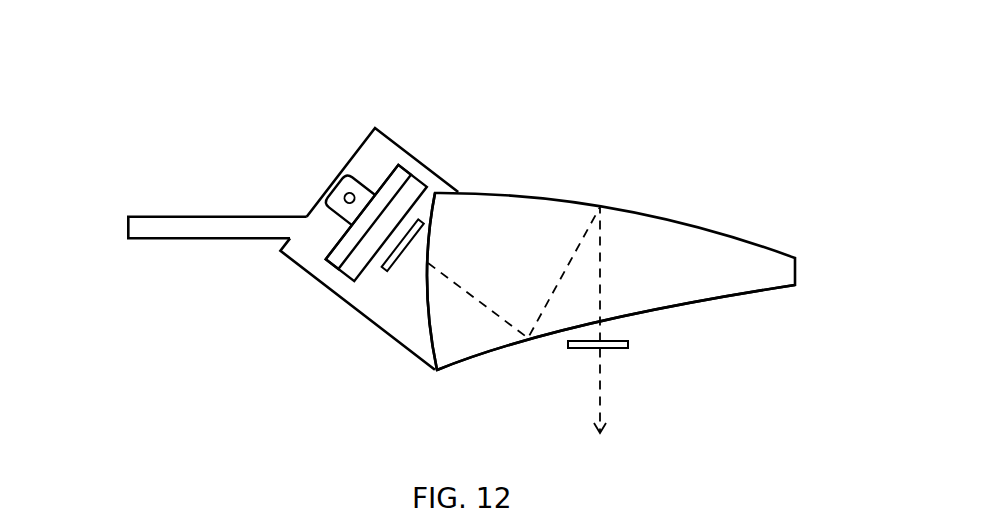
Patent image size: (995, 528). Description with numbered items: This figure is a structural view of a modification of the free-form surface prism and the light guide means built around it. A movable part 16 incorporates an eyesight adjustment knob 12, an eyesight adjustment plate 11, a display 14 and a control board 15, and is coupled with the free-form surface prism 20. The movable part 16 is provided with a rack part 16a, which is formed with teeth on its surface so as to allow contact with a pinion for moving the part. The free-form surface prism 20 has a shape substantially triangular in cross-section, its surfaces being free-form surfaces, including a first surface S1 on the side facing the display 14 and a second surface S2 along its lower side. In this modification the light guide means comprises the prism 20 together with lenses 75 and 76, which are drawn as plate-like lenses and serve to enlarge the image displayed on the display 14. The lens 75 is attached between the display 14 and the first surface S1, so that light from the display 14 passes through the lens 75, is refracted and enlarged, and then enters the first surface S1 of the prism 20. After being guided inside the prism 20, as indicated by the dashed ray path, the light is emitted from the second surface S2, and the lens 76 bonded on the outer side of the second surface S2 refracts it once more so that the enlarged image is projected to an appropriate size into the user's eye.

The eyesight adjustment plate 11 is at (335, 188).
The eyesight adjustment knob 12 is at (341, 180).
The display 14 is at (345, 281).
The control board 15 is at (323, 266).
The movable part 16 is at (372, 322).
The rack part 16a is at (195, 238).
The free-form surface prism 20 is at (780, 248).
The lens 75 is at (417, 220).
The lens 76 is at (608, 348).
The first surface S1 is at (427, 358).
The second surface S2 is at (687, 305).